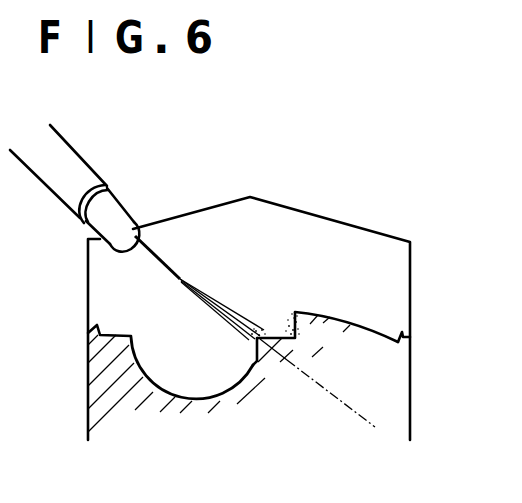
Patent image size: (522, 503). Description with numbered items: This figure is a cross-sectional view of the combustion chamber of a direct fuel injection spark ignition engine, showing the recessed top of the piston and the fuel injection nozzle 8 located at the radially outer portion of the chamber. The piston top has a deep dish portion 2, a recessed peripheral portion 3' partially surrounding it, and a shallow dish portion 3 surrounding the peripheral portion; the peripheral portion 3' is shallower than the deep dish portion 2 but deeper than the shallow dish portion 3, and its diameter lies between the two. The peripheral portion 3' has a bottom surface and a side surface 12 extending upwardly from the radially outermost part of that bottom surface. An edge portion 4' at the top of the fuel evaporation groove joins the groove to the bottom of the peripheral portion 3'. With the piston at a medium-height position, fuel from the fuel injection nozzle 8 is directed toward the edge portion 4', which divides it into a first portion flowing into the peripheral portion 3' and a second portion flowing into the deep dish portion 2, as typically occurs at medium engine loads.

The deep recessed dish portion 2 is at (186, 402).
The shallow recessed dish portion 3 is at (346, 301).
The recessed peripheral portion 3' is at (266, 286).
The edge portion 4' is at (255, 330).
The fuel injection nozzle 8 is at (114, 212).
The side surface 12 is at (290, 330).